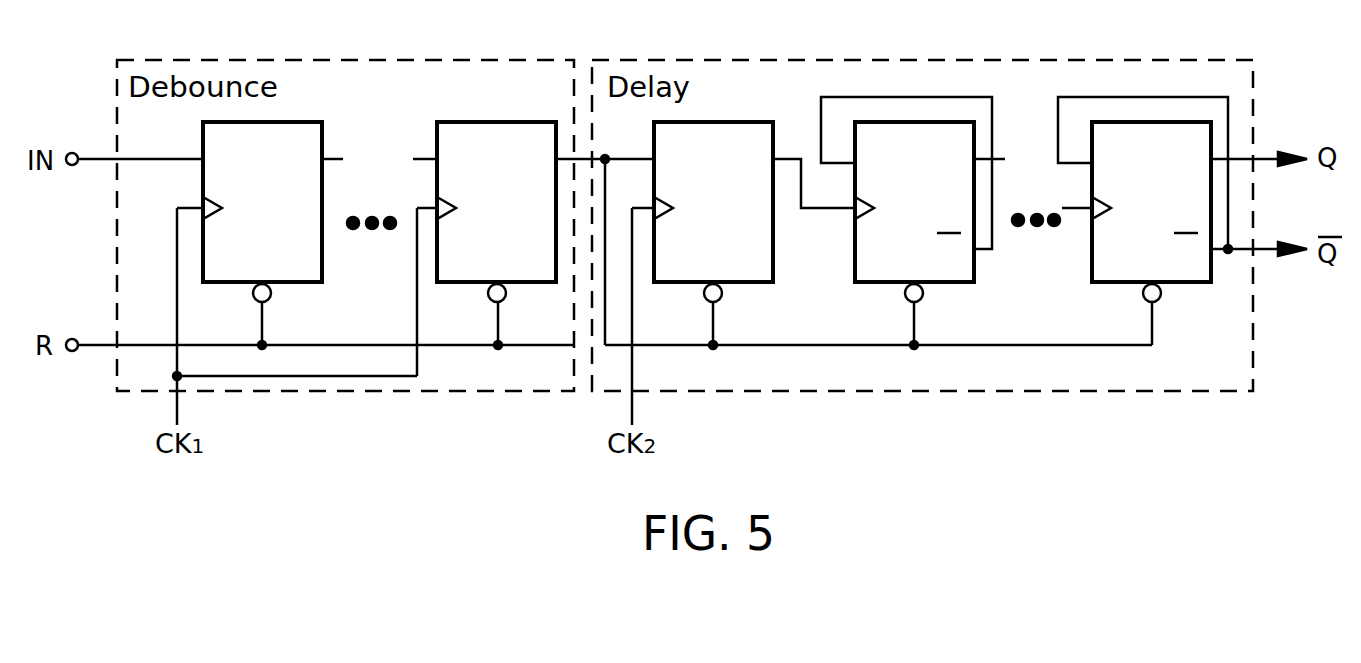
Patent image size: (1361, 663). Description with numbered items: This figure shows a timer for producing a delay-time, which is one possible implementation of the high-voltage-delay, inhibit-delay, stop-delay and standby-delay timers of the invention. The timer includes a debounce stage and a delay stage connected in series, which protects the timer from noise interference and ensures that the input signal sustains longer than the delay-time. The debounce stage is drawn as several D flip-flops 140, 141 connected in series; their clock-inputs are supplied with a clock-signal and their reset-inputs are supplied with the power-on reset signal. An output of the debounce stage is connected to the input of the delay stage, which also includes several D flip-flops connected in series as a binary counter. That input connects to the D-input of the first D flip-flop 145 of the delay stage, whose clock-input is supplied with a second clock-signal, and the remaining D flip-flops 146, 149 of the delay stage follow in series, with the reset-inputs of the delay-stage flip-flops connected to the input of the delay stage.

The debounce D flip-flop (first) 140 is at (300, 118).
The debounce D flip-flop (last) 141 is at (490, 118).
The first D flip-flop of the delay stage 145 is at (742, 118).
The delay toggle D flip-flop 146 is at (940, 118).
The delay toggle D flip-flop (last, output) 149 is at (1182, 118).